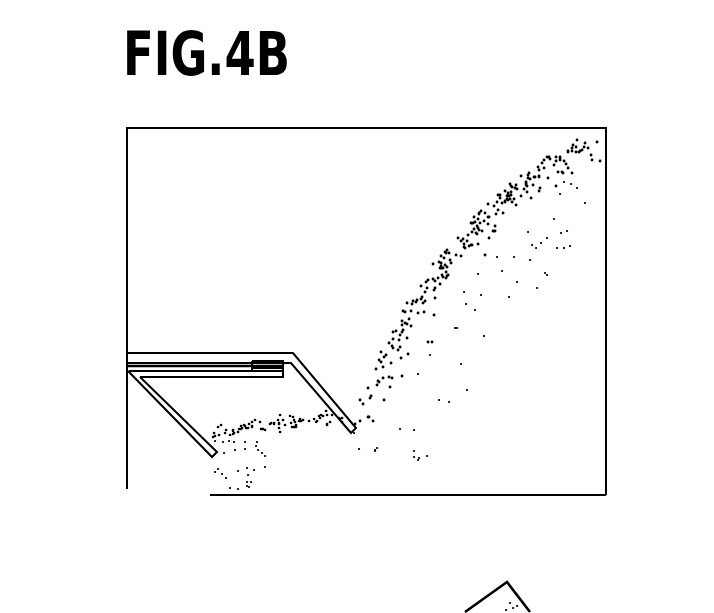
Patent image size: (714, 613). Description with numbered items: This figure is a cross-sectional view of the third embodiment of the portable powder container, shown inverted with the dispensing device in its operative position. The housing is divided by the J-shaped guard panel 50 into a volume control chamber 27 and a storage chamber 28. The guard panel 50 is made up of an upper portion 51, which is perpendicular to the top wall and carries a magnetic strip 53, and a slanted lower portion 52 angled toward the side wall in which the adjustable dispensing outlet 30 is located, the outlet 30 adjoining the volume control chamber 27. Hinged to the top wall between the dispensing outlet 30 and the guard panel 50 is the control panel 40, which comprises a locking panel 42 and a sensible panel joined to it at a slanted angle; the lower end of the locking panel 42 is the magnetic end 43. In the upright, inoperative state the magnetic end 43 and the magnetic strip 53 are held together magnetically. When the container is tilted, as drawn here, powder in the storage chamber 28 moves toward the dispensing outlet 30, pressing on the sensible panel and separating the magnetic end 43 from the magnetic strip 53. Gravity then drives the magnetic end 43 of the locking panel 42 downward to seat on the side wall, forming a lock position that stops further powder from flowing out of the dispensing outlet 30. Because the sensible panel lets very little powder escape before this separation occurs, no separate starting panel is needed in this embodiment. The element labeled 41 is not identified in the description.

The volume control chamber 27 is at (257, 405).
The storage chamber 28 is at (578, 283).
The adjustable dispensing outlet 30 is at (177, 483).
The control panel 40 is at (212, 392).
The inclined arm 41 is at (172, 427).
The locking panel 42 is at (260, 378).
The magnetic end 43 is at (287, 370).
The guard panel 50 is at (253, 275).
The upper portion 51 is at (168, 350).
The lower portion 52 is at (318, 383).
The magnetic strip 53 is at (268, 357).